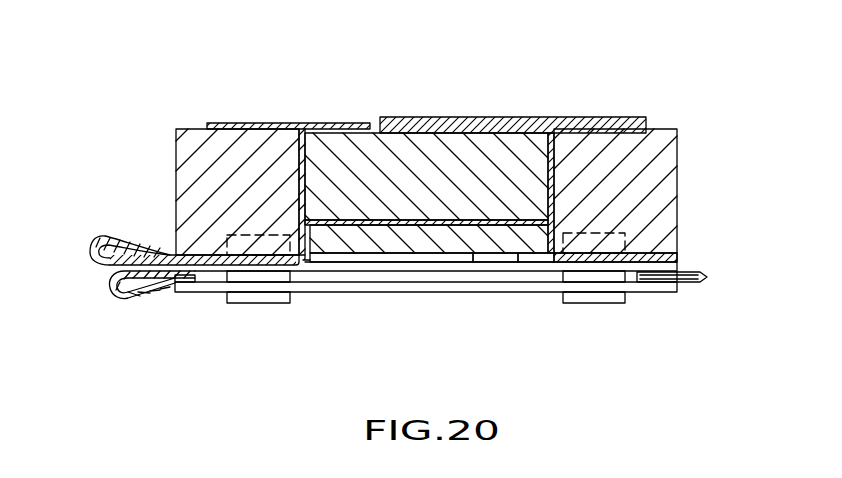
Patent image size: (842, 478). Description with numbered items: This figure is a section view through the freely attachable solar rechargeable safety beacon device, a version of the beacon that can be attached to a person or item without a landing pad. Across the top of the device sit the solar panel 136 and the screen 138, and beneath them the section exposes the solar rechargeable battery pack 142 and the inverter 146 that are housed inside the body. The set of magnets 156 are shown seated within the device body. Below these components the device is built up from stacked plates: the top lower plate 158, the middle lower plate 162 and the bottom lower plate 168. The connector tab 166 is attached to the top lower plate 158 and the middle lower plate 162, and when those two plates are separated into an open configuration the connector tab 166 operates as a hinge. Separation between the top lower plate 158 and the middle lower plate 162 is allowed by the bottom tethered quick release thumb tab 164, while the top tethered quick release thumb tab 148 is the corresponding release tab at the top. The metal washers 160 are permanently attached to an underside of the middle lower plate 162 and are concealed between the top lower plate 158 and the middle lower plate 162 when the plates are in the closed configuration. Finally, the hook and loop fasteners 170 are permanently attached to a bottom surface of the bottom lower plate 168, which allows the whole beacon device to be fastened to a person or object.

The solar panel 136 is at (244, 125).
The screen 138 is at (540, 121).
The solar rechargeable battery pack 142 is at (430, 142).
The inverter 146 is at (408, 125).
The top tethered quick release thumb tab 148 is at (96, 243).
The magnets 156 is at (627, 240).
The top lower plate 158 is at (673, 258).
The metal washers 160 is at (577, 277).
The middle lower plate 162 is at (206, 272).
The bottom tethered quick release thumb tab 164 is at (155, 300).
The connector tab 166 is at (684, 283).
The bottom lower plate 168 is at (378, 292).
The hook and loop fasteners 170 is at (587, 295).